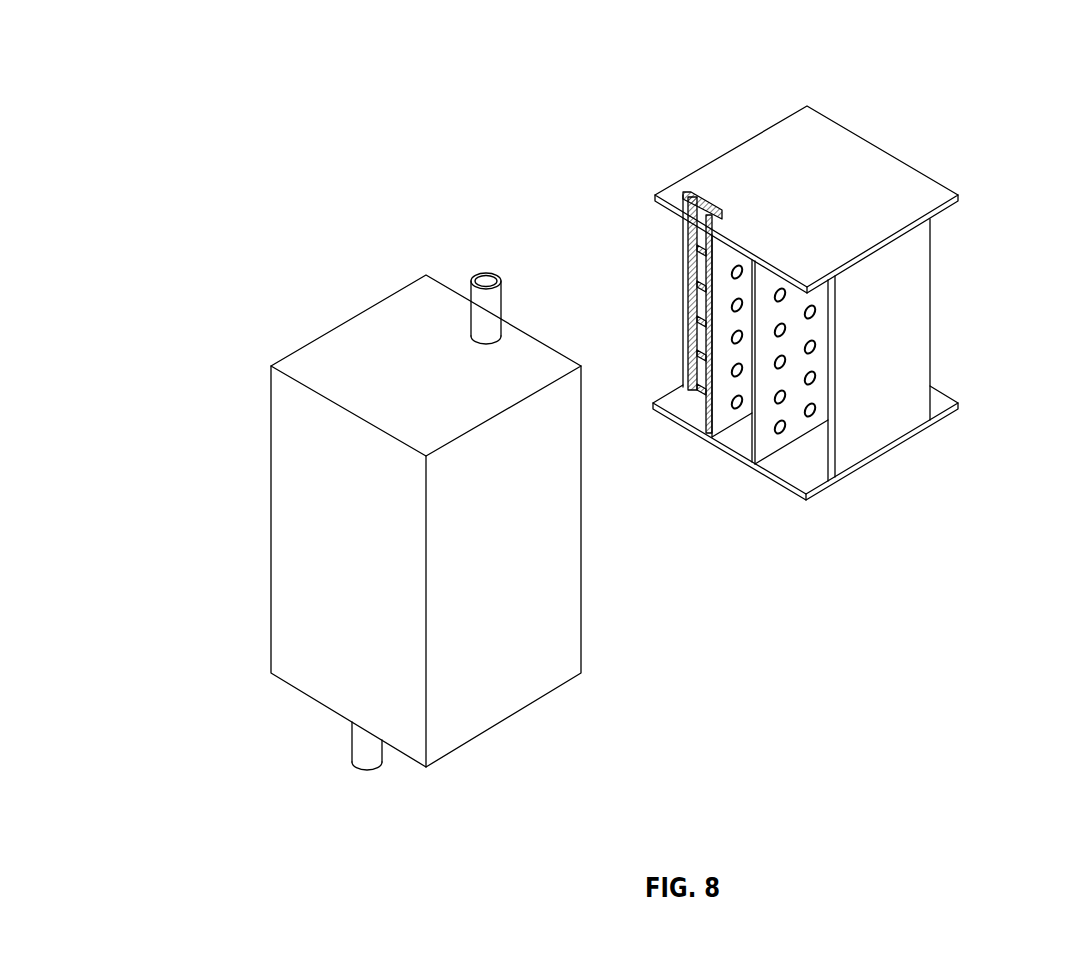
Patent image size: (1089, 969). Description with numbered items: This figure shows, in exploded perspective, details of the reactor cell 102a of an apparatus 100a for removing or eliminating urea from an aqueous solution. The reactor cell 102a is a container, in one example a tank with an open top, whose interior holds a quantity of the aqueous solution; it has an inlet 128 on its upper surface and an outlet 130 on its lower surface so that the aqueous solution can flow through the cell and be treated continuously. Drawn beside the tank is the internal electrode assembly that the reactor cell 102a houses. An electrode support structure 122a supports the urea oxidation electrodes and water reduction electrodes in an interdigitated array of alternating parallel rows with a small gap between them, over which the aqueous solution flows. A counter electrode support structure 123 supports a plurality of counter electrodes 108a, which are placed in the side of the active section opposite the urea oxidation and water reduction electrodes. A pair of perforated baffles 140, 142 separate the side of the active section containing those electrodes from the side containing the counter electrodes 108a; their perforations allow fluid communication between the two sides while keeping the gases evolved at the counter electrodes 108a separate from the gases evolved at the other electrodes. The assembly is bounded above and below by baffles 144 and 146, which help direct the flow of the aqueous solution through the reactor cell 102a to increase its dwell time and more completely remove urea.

The apparatus 100a is at (647, 83).
The reactor cell 102a is at (288, 572).
The inlet 128 is at (478, 313).
The outlet 130 is at (363, 748).
The baffle 144 is at (823, 127).
The baffle 146 is at (800, 480).
The electrode support structure 122a is at (910, 298).
The counter electrode support structure 123 is at (685, 232).
The counter electrode 108a is at (700, 340).
The perforated baffle 142 is at (713, 407).
The perforated baffle 140 is at (767, 435).